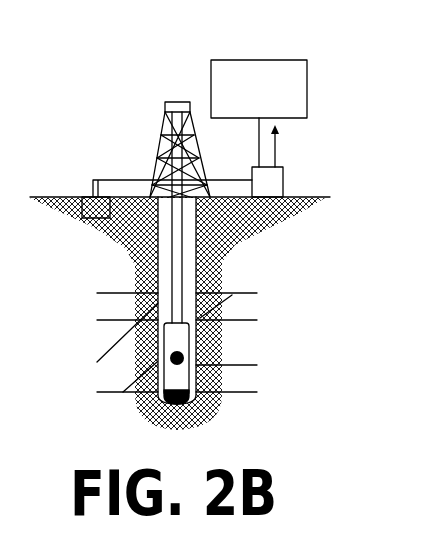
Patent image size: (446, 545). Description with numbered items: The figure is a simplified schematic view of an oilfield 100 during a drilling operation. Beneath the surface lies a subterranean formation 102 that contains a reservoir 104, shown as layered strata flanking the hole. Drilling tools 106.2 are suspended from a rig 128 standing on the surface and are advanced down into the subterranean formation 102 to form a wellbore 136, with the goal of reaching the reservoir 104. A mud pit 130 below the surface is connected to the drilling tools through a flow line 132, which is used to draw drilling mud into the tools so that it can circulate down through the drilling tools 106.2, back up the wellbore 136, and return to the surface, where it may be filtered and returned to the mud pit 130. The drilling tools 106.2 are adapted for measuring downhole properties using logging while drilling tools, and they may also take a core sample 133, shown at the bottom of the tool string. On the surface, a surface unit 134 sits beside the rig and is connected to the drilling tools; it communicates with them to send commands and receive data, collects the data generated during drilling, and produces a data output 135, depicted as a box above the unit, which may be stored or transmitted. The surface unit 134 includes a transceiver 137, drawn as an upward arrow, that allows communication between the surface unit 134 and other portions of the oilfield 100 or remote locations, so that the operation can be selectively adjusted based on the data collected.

The oilfield 100 is at (94, 103).
The subterranean formation 102 is at (272, 279).
The reservoir 104 is at (260, 353).
The drilling tools 106.2 is at (163, 348).
The rig 128 is at (158, 147).
The mud pit 130 is at (95, 219).
The flow line 132 is at (93, 187).
The core sample 133 is at (158, 403).
The surface unit 134 is at (283, 180).
The data output 135 is at (283, 60).
The wellbore 136 is at (192, 237).
The transceiver 137 is at (278, 150).